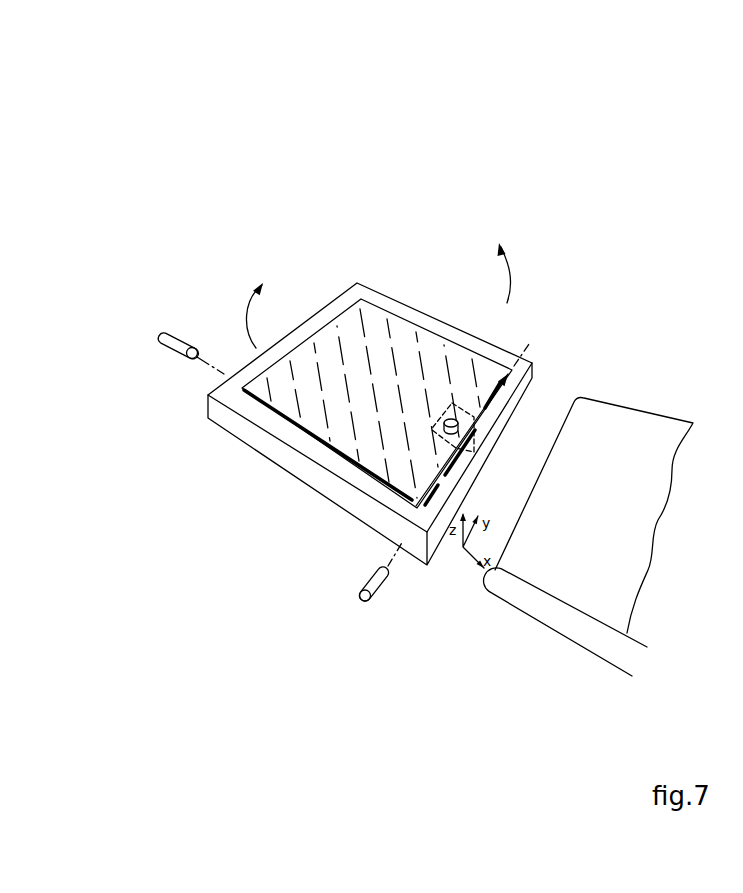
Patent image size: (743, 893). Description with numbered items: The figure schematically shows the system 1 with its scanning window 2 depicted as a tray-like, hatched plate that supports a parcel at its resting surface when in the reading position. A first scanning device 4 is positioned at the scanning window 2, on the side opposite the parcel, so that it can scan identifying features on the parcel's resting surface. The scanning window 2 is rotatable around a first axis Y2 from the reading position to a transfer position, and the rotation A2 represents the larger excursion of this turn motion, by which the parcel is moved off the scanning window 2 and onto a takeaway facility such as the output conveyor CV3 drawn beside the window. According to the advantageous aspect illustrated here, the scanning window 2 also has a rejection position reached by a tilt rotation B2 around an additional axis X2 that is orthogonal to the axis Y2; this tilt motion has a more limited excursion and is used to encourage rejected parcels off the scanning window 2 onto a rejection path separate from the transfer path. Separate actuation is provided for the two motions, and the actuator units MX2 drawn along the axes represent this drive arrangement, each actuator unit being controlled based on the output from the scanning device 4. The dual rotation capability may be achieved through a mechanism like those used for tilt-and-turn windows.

The system 1 is at (372, 140).
The scanning window 2 is at (433, 362).
The first scanning device 4 is at (483, 475).
The additional axis X2 is at (300, 440).
The first axis Y2 is at (513, 418).
The actuator unit MX2 is at (185, 338).
The rotation A2 is at (265, 315).
The rotation B2 is at (522, 273).
The output conveyor CV3 is at (626, 561).